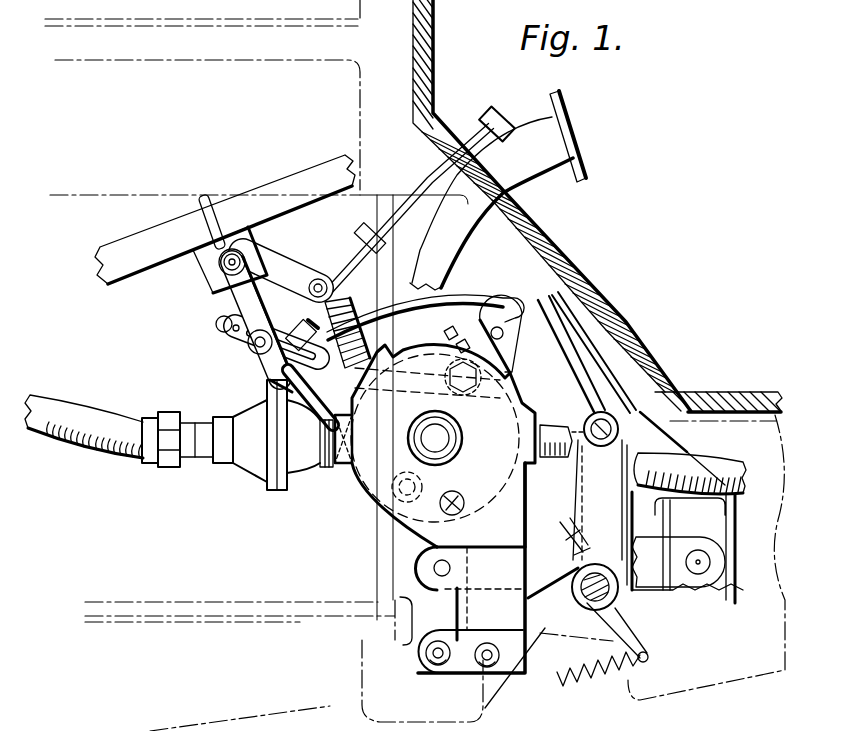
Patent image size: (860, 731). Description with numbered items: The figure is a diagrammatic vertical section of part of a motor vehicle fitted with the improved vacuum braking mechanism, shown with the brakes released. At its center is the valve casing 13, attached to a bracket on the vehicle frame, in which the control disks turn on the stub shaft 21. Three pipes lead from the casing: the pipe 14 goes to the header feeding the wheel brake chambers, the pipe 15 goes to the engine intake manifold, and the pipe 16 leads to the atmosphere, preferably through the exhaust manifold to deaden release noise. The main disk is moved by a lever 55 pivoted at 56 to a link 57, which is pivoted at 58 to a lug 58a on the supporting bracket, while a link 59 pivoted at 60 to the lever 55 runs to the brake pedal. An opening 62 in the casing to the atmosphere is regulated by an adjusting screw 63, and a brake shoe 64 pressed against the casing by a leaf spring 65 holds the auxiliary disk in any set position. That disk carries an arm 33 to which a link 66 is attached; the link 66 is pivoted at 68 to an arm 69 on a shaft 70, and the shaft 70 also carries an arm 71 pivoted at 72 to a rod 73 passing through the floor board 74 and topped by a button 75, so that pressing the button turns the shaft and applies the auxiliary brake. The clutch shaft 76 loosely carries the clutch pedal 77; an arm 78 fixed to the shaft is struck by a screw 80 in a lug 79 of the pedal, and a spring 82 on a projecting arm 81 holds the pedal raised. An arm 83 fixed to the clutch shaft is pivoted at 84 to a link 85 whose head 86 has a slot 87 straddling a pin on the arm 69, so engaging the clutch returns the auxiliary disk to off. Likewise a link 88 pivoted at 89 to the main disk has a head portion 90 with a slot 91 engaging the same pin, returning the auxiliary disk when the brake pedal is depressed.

The casing 13 is at (366, 470).
The pipe 14 is at (716, 468).
The pipe 15 is at (316, 316).
The pipe 16 is at (77, 425).
The stub shaft 21 is at (451, 441).
The arm 33 is at (540, 310).
The lever 55 is at (438, 610).
The pivot 56 is at (436, 654).
The link 57 is at (448, 668).
The pivot 58 is at (464, 674).
The lug 58a is at (531, 638).
The link 59 is at (681, 545).
The pivot 60 is at (436, 567).
The opening 62 is at (452, 380).
The adjusting screw 63 is at (455, 338).
The brake shoe 64 is at (617, 340).
The leaf spring 65 is at (553, 350).
The link 66 is at (453, 305).
The pivot 68 is at (248, 344).
The arm 69 is at (228, 294).
The shaft 70 is at (235, 250).
The arm 71 is at (275, 270).
The pivot 72 is at (321, 278).
The rod 73 is at (424, 184).
The floor board 74 is at (524, 219).
The button 75 is at (497, 110).
The clutch shaft 76 is at (612, 595).
The clutch pedal 77 is at (580, 139).
The arm 78 is at (555, 577).
The lug 79 is at (558, 460).
The screw 80 is at (598, 524).
The projecting arm 81 is at (650, 657).
The spring 82 is at (598, 683).
The arm 83 is at (710, 398).
The pivot 84 is at (617, 457).
The link 85 is at (564, 354).
The head 86 is at (262, 366).
The slot 87 is at (270, 382).
The link 88 is at (352, 404).
The pivot 89 is at (374, 512).
The head portion 90 is at (222, 313).
The slot 91 is at (233, 325).